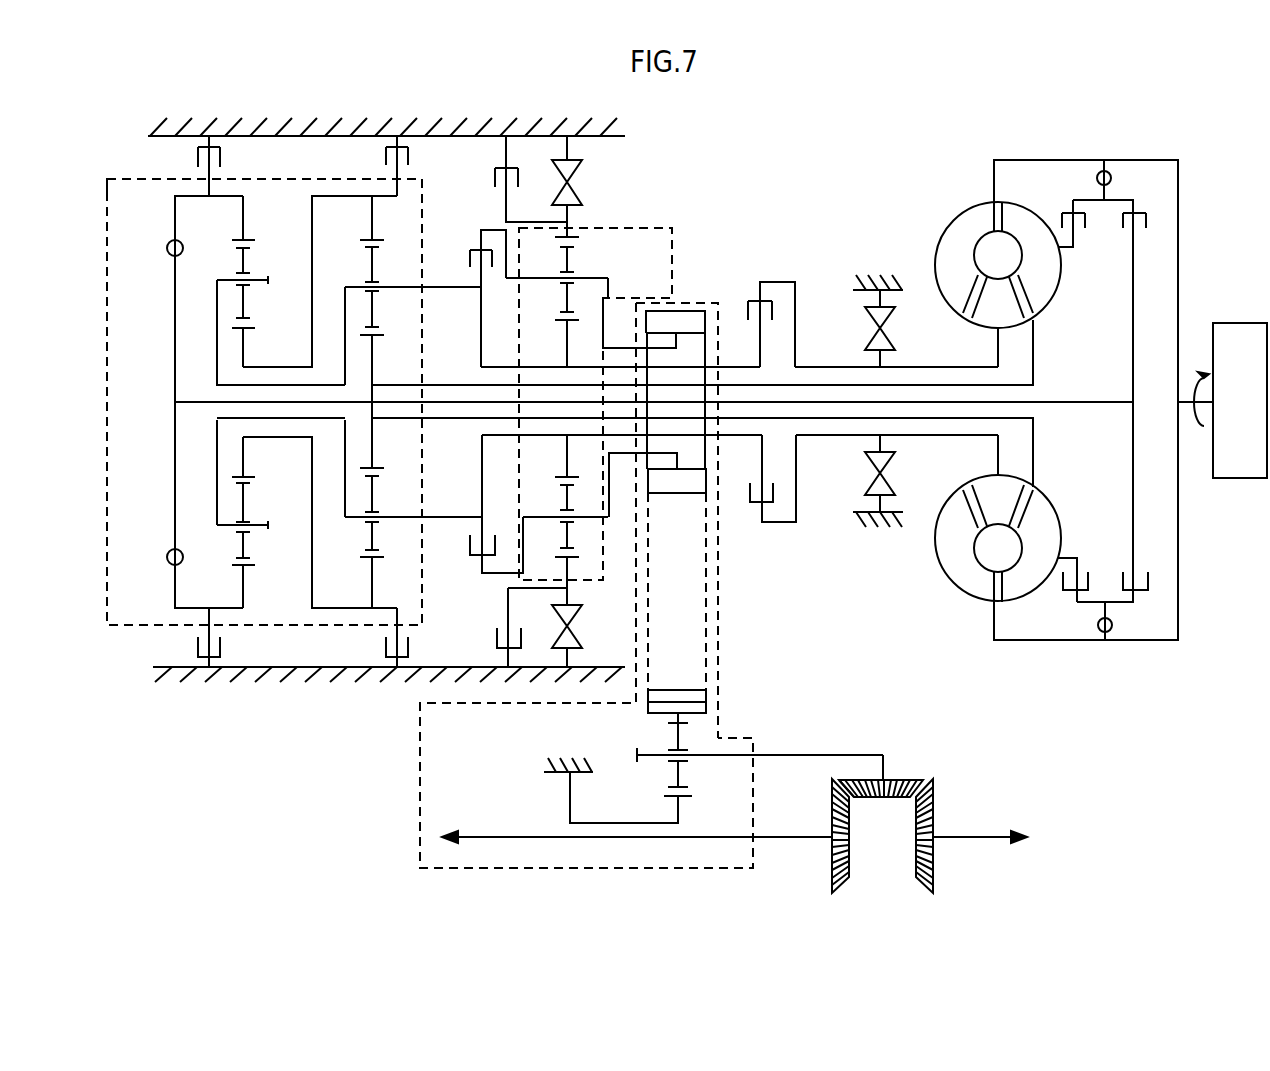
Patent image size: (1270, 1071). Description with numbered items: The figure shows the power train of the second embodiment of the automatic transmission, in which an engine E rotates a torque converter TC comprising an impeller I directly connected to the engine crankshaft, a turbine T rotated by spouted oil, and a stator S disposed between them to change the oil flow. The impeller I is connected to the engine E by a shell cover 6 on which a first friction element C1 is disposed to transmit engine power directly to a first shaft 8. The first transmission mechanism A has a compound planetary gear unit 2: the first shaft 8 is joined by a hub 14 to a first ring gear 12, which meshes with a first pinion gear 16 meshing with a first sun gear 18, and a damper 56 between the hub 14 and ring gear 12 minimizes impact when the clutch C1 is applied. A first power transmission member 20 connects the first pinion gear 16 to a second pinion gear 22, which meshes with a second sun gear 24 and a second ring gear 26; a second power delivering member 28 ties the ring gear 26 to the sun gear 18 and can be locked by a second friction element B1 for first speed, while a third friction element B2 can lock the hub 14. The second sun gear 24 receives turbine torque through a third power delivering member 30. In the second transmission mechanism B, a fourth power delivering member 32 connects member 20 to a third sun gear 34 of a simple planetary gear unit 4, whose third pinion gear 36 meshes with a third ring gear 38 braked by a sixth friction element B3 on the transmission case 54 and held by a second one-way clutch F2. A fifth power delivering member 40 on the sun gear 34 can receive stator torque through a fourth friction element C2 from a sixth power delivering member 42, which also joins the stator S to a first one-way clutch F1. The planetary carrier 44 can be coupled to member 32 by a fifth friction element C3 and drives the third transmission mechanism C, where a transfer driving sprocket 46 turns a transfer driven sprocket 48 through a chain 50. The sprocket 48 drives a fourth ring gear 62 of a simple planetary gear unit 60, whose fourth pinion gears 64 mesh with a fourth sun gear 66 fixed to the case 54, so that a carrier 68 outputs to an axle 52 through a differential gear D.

The compound planetary gear unit 2 is at (122, 178).
The simple planetary gear unit 4 is at (675, 244).
The shell cover 6 is at (1082, 160).
The first shaft 8 is at (1093, 399).
The first ring gear 12 is at (240, 240).
The hub 14 is at (173, 325).
The first pinion gear 16 is at (248, 318).
The first sun gear 18 is at (250, 330).
The first power transmission member 20 is at (237, 385).
The second pinion gear 22 is at (372, 251).
The second sun gear 24 is at (372, 338).
The second ring gear 26 is at (372, 240).
The second power delivering member 28 is at (312, 222).
The third power delivering member 30 is at (1022, 385).
The fourth power delivering member 32 is at (448, 290).
The third sun gear 34 is at (577, 320).
The third pinion gear 36 is at (558, 320).
The third ring gear 38 is at (570, 238).
The fifth power delivering member 40 is at (740, 365).
The sixth power delivering member 42 is at (820, 365).
The planetary carrier 44 is at (612, 300).
The transfer driving sprocket 46 is at (695, 480).
The transfer driven sprocket 48 is at (705, 695).
The chain 50 is at (712, 616).
The axle 52 is at (984, 836).
The transmission case 54 is at (400, 132).
The damper 56 is at (167, 251).
The simple planetary gear unit 60 is at (665, 763).
The fourth ring gear 62 is at (705, 707).
The fourth pinion gears 64 is at (670, 723).
The fourth sun gear 66 is at (690, 796).
The carrier 68 is at (868, 755).
The second friction element B1 is at (410, 401).
The third friction element B2 is at (222, 401).
The sixth friction element B3 is at (531, 401).
The first friction element C1 is at (1112, 400).
The fourth friction element C2 is at (758, 397).
The fifth friction element C3 is at (479, 401).
The first one-way clutch F1 is at (885, 401).
The second one-way clutch F2 is at (579, 401).
The torque converter TC is at (1010, 150).
The impeller I is at (956, 235).
The turbine T is at (1045, 288).
The stator S is at (985, 312).
The engine E is at (1222, 400).
The first transmission mechanism A is at (432, 198).
The second transmission mechanism B is at (597, 222).
The third transmission mechanism C is at (398, 805).
The differential gear D is at (814, 797).